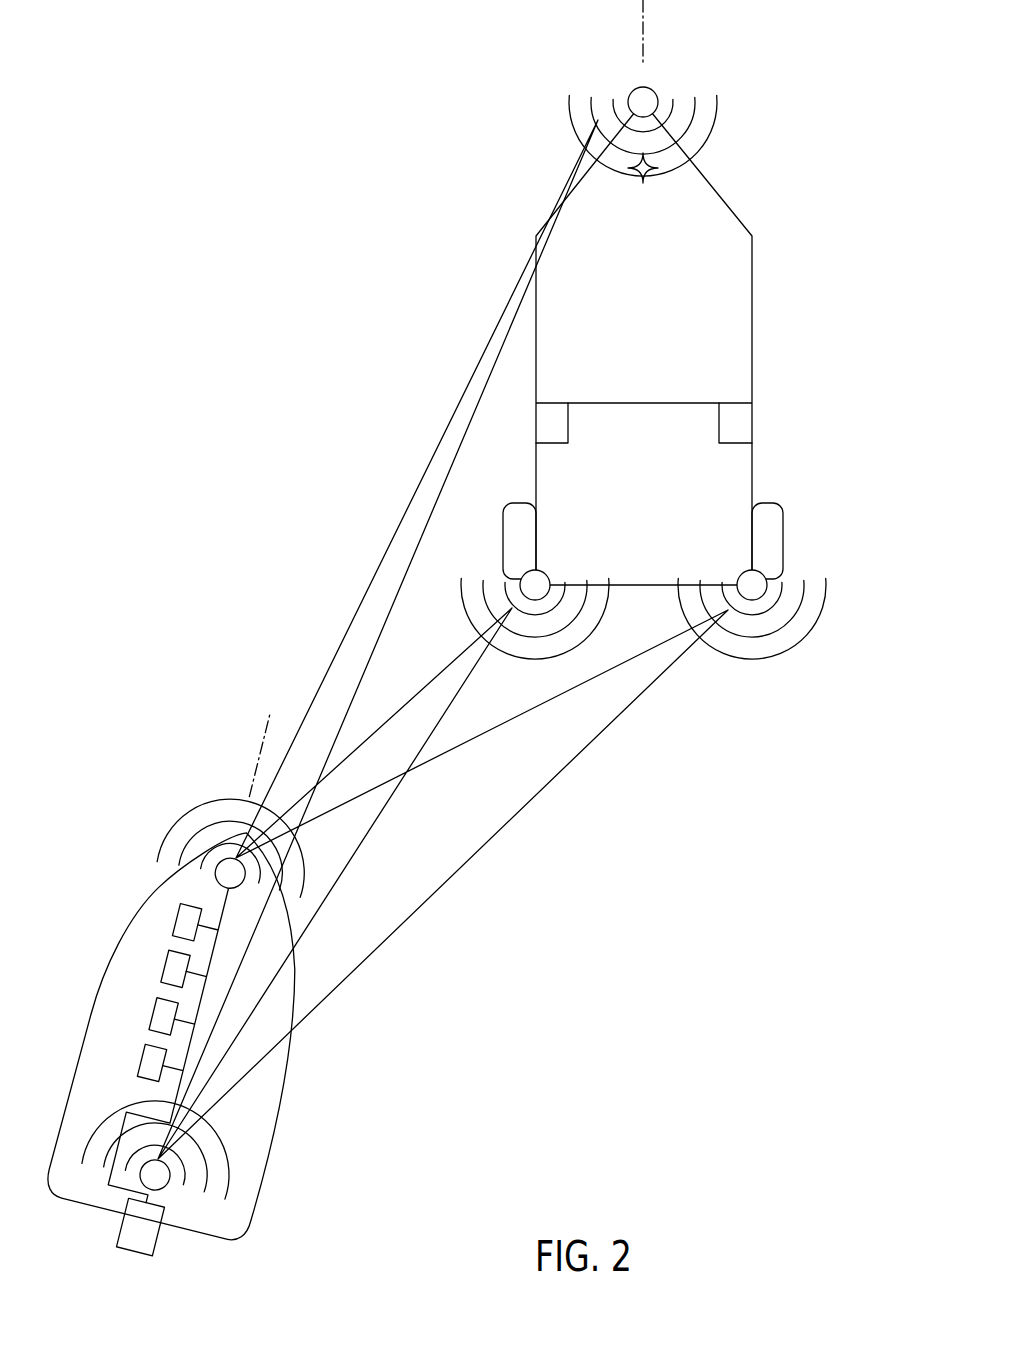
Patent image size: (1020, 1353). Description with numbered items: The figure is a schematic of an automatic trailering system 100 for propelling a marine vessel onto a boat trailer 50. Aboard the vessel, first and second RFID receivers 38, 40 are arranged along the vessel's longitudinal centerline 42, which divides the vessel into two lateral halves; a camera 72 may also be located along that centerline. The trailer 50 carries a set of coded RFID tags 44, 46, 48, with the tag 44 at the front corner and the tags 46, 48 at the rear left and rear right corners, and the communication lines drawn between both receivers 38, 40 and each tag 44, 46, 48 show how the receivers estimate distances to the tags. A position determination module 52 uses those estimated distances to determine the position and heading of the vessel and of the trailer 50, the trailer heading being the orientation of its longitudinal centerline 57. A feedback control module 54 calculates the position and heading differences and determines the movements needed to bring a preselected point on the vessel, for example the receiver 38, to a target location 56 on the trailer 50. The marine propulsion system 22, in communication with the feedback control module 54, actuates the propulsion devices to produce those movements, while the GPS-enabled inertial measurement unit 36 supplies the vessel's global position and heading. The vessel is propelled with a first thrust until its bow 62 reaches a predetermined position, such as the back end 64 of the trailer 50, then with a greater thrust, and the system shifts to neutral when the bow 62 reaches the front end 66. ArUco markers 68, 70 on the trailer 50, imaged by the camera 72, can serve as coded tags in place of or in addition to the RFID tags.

The automatic trailering system 100 is at (529, 892).
The marine propulsion system 22 is at (129, 1256).
The GPS-enabled inertial measurement unit 36 is at (138, 1069).
The RFID receiver 38 is at (217, 880).
The RFID receiver 40 is at (172, 1188).
The longitudinal centerline 42 is at (258, 753).
The RFID tag 44 is at (649, 88).
The RFID tag 46 is at (546, 574).
The RFID tag 48 is at (746, 574).
The boat trailer 50 is at (752, 367).
The position determination module 52 is at (161, 976).
The feedback control module 54 is at (149, 1022).
The target location 56 is at (646, 187).
The longitudinal centerline 57 is at (641, 28).
The bow 62 is at (201, 832).
The back end 64 is at (648, 602).
The front end 66 is at (674, 120).
The ArUco marker 68 is at (551, 446).
The ArUco marker 70 is at (737, 446).
The camera 72 is at (172, 917).